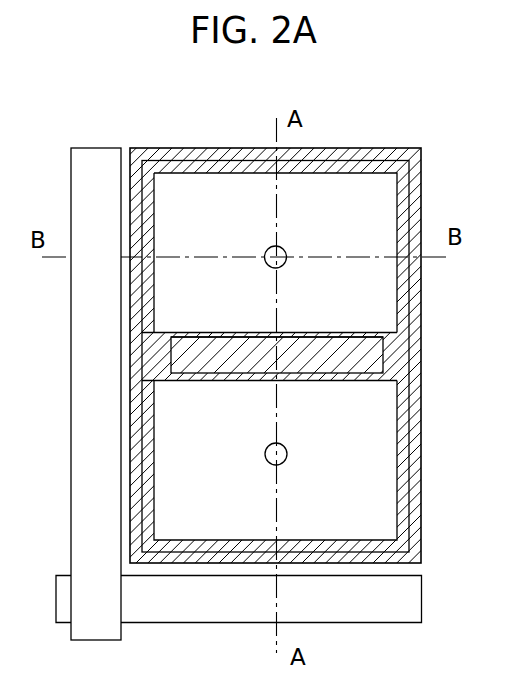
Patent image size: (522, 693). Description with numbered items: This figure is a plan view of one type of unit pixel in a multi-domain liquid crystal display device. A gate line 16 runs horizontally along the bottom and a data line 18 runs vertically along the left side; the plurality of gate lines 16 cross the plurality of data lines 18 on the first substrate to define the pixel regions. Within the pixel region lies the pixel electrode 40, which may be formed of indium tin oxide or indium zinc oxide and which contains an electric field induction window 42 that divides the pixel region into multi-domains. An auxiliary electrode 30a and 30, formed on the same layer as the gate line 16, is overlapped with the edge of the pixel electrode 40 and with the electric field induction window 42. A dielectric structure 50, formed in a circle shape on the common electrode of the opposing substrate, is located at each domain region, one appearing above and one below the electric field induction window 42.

The gate line 16 is at (417, 599).
The data line 18 is at (78, 396).
The auxiliary electrode 30 is at (417, 355).
The auxiliary electrode 30a is at (212, 337).
The pixel electrode 40 is at (410, 472).
The electric field induction window 42 is at (355, 337).
The dielectric structure 50 is at (287, 454).